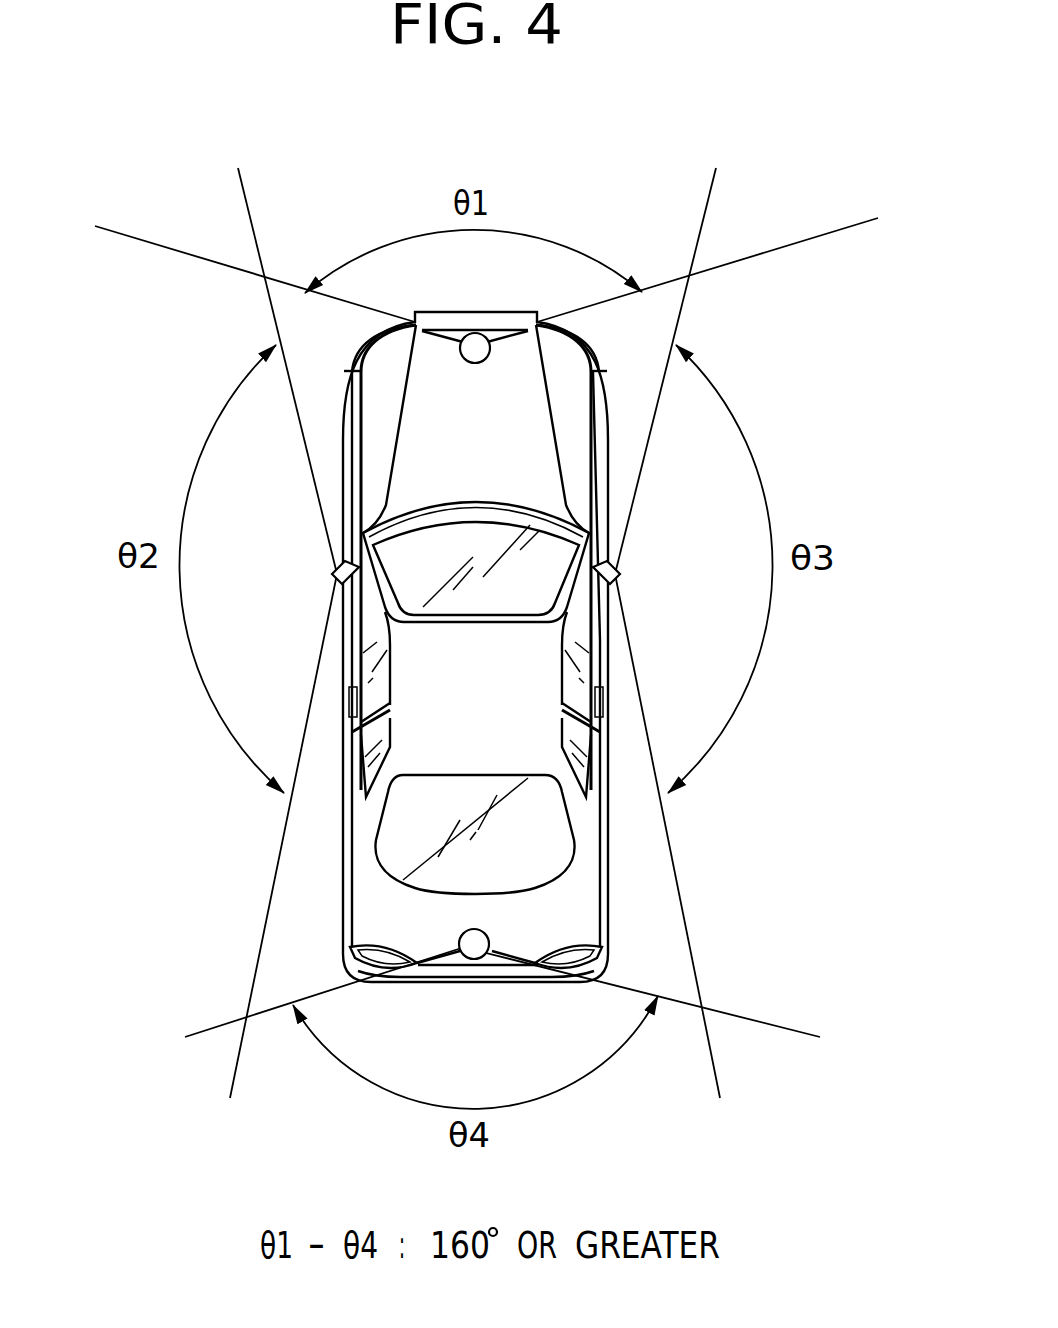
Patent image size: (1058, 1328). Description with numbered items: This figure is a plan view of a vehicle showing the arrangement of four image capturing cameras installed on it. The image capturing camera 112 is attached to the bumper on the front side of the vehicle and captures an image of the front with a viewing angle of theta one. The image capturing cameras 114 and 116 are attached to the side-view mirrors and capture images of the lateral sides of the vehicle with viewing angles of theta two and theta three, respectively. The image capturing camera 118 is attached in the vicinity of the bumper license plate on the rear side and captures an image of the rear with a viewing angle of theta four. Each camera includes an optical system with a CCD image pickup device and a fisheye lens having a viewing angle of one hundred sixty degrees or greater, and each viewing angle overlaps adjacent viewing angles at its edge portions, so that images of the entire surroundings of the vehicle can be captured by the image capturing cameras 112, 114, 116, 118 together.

The image capturing camera 112 is at (480, 334).
The image capturing camera 114 is at (332, 568).
The image capturing camera 116 is at (622, 582).
The image capturing camera 118 is at (475, 960).